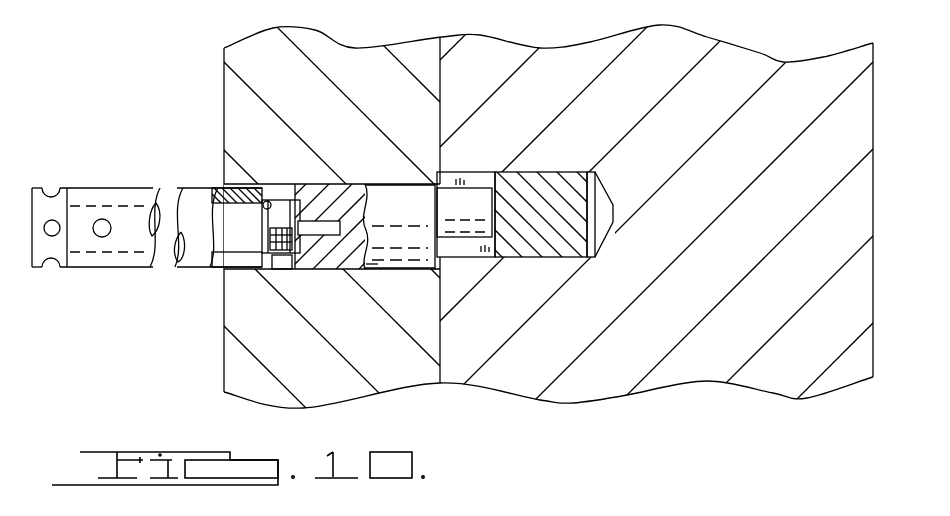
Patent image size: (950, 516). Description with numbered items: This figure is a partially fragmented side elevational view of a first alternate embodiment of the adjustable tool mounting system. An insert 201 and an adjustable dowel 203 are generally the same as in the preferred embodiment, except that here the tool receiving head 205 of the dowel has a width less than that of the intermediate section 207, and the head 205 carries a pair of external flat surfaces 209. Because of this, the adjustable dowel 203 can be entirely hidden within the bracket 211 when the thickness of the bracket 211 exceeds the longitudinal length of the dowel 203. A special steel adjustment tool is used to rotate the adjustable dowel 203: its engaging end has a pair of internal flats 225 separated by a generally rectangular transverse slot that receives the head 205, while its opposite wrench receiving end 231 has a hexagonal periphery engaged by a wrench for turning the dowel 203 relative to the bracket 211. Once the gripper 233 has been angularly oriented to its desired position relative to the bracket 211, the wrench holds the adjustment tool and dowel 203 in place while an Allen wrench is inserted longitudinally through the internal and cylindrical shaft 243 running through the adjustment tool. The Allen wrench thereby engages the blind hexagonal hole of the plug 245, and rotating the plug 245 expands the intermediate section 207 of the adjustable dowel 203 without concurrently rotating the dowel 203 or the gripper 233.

The insert 201 is at (492, 178).
The adjustable dowel 203 is at (372, 265).
The tool receiving head 205 is at (278, 260).
The intermediate section 207 is at (395, 189).
The external flat surfaces 209 is at (280, 190).
The bracket 211 is at (300, 79).
The internal flats 225 is at (260, 205).
The wrench receiving end 231 is at (52, 258).
The gripper 233 is at (790, 303).
The internal and cylindrical shaft 243 is at (203, 207).
The plug 245 is at (297, 203).